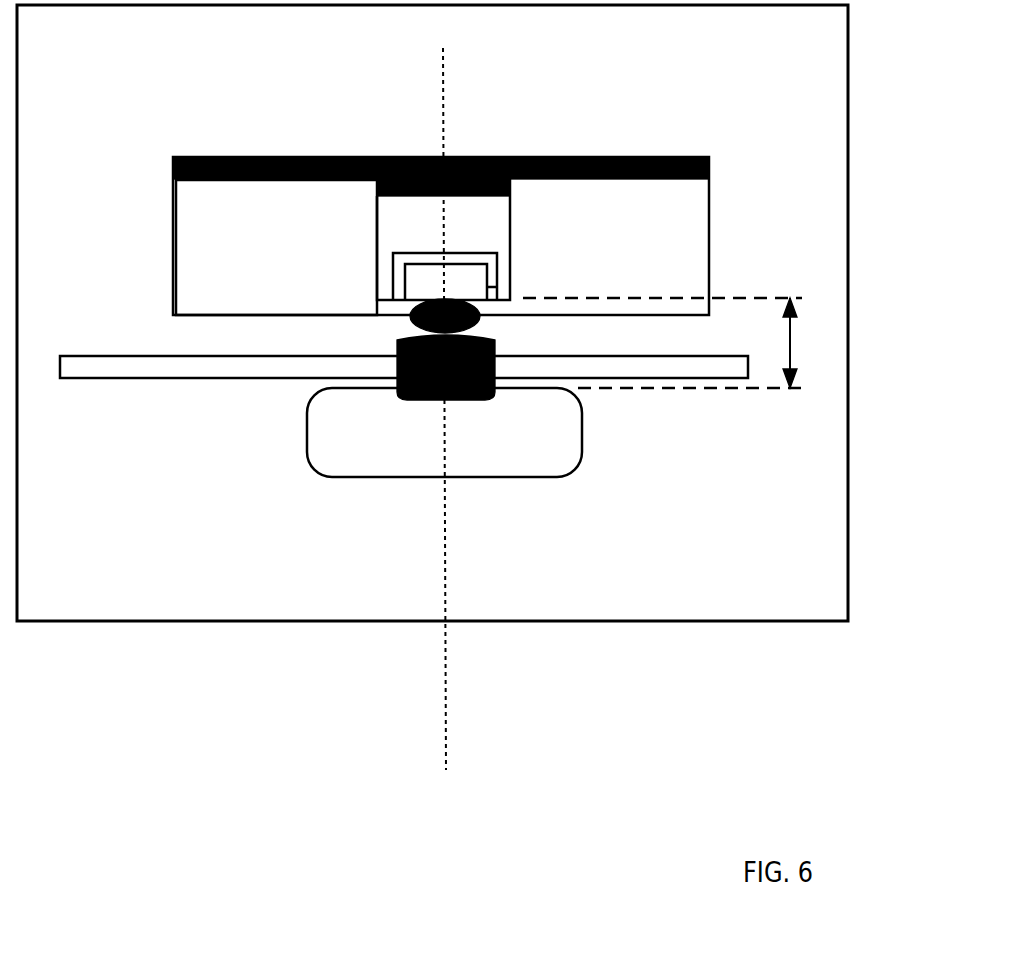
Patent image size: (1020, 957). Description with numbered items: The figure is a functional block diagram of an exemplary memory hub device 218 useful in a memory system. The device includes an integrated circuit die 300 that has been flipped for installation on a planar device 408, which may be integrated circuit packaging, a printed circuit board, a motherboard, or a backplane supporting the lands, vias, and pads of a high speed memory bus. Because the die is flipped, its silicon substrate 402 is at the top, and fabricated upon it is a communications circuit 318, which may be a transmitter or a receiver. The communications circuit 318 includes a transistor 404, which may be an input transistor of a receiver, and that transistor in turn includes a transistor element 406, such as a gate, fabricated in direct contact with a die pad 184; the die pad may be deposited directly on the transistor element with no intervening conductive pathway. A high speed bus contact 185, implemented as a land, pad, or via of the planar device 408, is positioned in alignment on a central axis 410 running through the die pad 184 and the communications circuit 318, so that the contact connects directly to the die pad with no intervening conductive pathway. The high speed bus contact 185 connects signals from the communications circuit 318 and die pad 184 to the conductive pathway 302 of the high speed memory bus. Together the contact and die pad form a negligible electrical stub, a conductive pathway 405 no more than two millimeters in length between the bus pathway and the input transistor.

The memory hub device 218 is at (850, 615).
The central axis 410 is at (448, 687).
The integrated circuit die 300 is at (173, 225).
The silicon substrate 402 is at (642, 128).
The communications circuit 318 is at (377, 253).
The transistor 404 is at (655, 203).
The transistor element 406 is at (487, 287).
The die pad 184 is at (410, 313).
The high speed bus contact 185 is at (395, 352).
The planar device 408 is at (205, 380).
The conductive pathway of a high speed memory bus 302 is at (305, 470).
The conductive pathway 405 is at (772, 463).